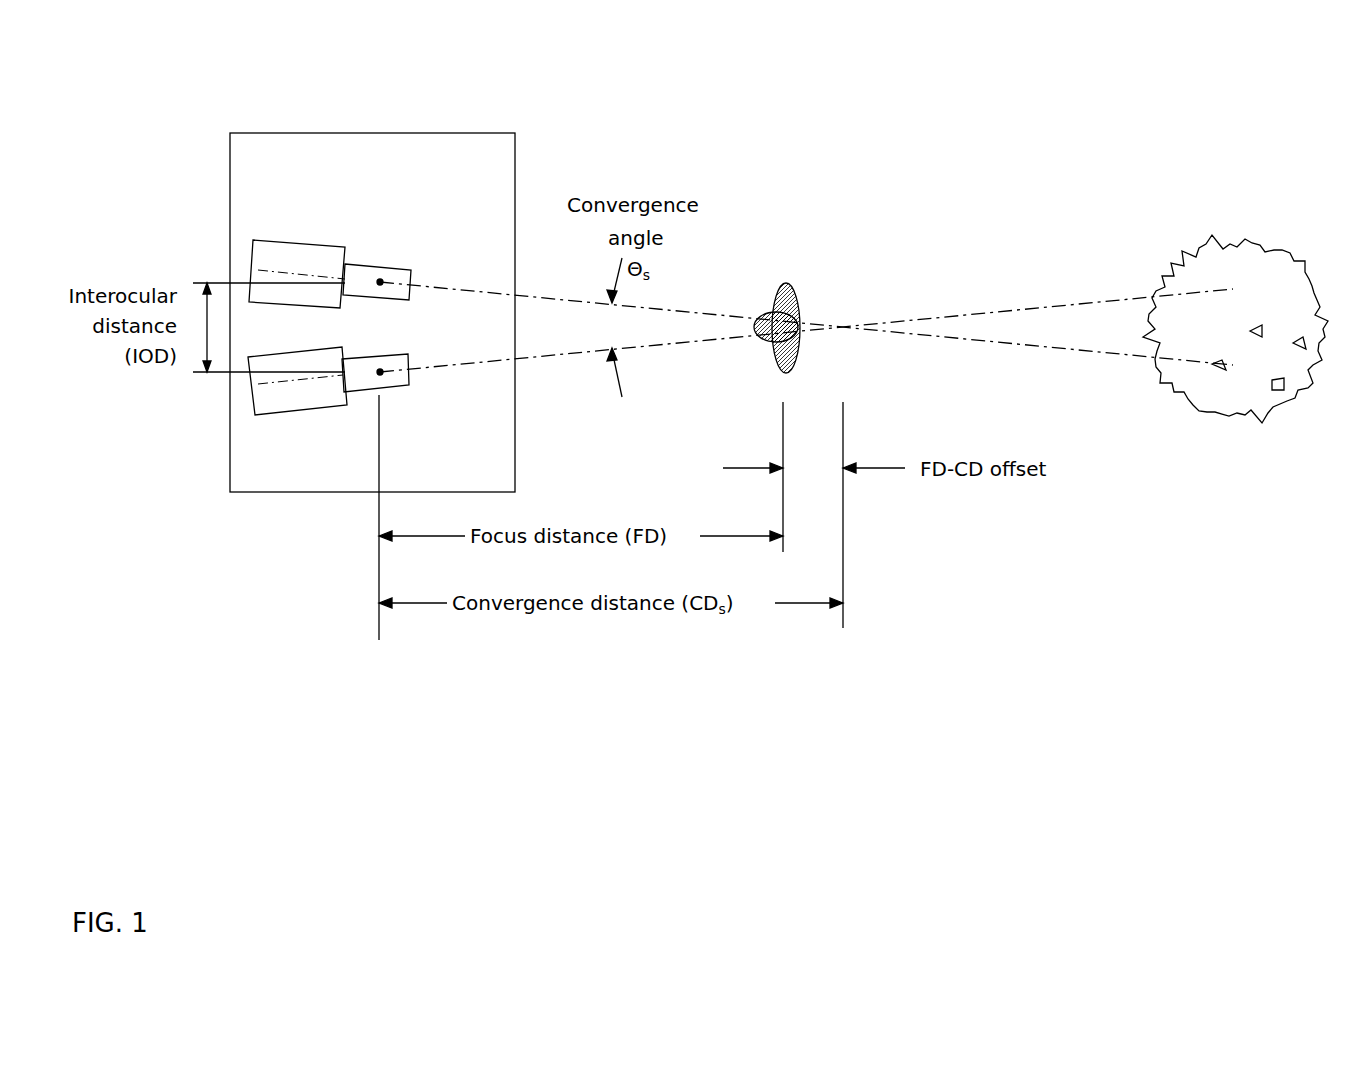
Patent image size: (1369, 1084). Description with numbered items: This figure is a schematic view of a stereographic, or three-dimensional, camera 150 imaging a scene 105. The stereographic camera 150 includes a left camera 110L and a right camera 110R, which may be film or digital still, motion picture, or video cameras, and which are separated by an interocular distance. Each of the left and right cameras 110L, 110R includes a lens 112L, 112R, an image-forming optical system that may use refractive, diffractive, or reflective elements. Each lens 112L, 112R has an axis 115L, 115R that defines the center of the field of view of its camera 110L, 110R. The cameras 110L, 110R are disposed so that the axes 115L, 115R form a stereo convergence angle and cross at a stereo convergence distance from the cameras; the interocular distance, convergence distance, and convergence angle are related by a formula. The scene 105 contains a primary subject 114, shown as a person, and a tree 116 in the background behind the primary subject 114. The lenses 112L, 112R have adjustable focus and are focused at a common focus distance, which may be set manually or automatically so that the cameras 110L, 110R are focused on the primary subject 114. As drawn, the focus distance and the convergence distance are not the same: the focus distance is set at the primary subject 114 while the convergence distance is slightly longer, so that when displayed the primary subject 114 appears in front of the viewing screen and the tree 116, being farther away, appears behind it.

The scene 105 is at (597, 96).
The stereographic camera 150 is at (372, 312).
The left camera 110L is at (297, 242).
The right camera 110R is at (317, 412).
The lens 112L is at (372, 260).
The lens 112R is at (387, 392).
The primary subject 114 is at (788, 278).
The axis 115L is at (983, 340).
The axis 115R is at (973, 315).
The tree 116 is at (1243, 238).